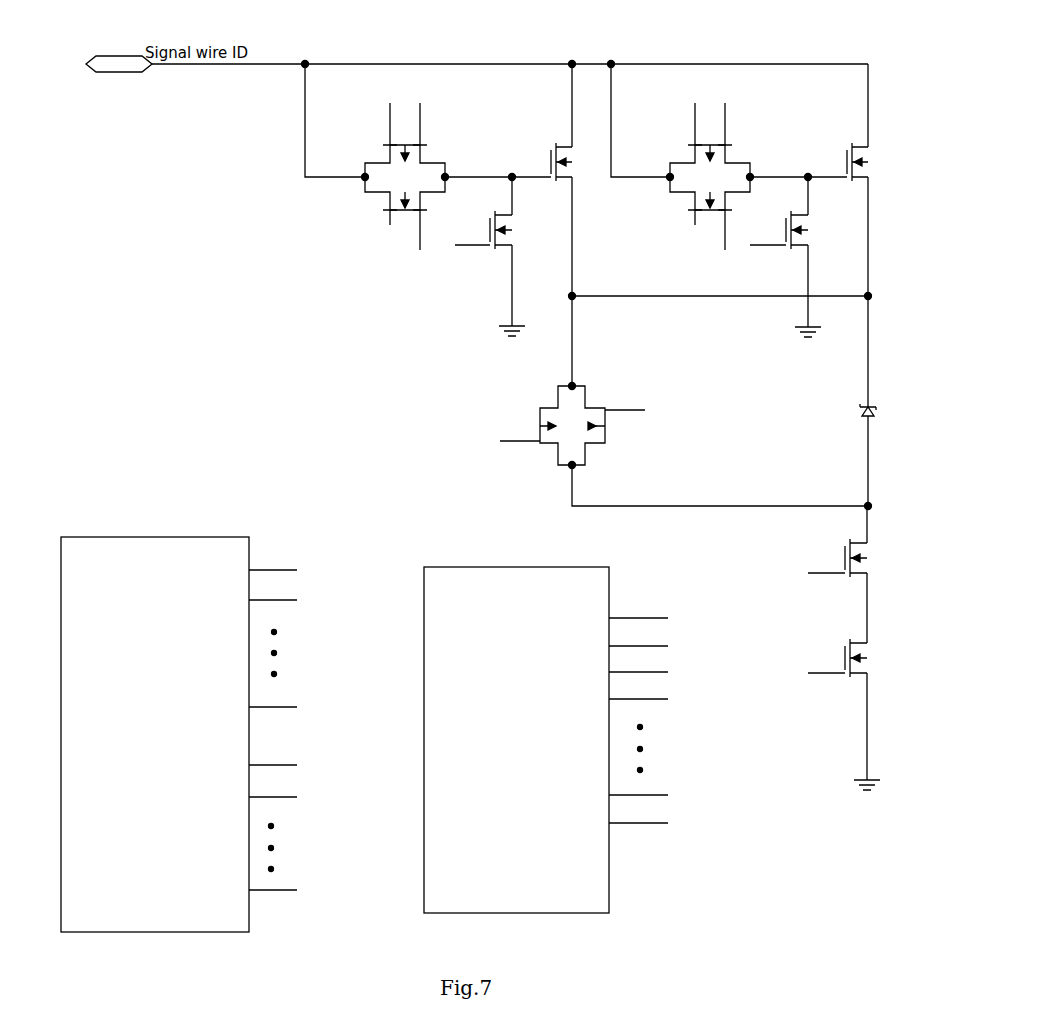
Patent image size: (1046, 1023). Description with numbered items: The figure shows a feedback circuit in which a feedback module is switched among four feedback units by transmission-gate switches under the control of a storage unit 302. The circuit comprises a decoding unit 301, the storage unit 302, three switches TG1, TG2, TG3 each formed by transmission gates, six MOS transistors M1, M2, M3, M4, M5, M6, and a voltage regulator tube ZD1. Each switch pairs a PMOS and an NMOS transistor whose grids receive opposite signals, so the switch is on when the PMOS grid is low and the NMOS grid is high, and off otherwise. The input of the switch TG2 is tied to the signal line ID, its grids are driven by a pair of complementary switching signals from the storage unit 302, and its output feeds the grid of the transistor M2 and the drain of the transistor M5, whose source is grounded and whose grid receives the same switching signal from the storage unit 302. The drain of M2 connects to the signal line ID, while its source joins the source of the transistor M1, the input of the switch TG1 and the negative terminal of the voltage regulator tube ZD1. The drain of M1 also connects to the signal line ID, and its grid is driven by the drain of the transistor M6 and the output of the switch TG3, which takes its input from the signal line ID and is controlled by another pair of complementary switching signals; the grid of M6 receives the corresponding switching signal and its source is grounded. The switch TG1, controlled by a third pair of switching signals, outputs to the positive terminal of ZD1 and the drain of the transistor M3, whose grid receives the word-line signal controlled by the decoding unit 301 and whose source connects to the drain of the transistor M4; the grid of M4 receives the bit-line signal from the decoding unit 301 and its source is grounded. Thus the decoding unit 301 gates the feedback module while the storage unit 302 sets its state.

The decoding unit 301 is at (179, 734).
The storage unit 302 is at (546, 740).
The MOS transistor M1 is at (874, 169).
The MOS transistor M2 is at (576, 169).
The MOS transistor M3 is at (858, 541).
The MOS transistor M4 is at (858, 714).
The MOS transistor M5 is at (495, 256).
The MOS transistor M6 is at (788, 257).
The transmission gate switch TG1 is at (622, 438).
The transmission gate switch TG2 is at (457, 183).
The transmission gate switch TG3 is at (757, 182).
The voltage regulator tube ZD1 is at (897, 455).